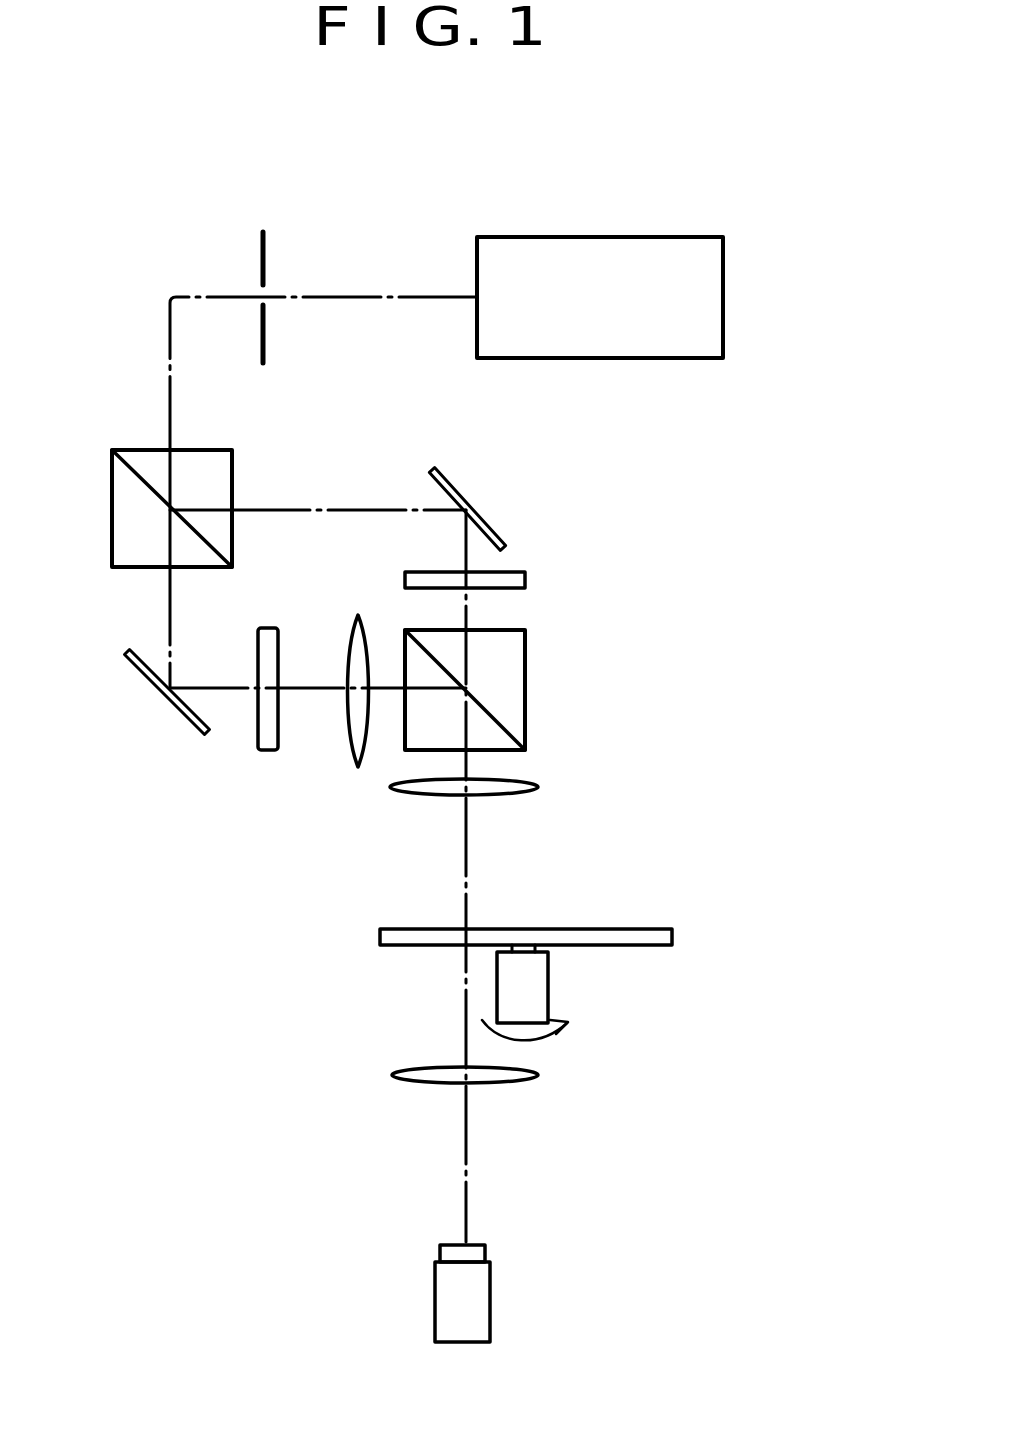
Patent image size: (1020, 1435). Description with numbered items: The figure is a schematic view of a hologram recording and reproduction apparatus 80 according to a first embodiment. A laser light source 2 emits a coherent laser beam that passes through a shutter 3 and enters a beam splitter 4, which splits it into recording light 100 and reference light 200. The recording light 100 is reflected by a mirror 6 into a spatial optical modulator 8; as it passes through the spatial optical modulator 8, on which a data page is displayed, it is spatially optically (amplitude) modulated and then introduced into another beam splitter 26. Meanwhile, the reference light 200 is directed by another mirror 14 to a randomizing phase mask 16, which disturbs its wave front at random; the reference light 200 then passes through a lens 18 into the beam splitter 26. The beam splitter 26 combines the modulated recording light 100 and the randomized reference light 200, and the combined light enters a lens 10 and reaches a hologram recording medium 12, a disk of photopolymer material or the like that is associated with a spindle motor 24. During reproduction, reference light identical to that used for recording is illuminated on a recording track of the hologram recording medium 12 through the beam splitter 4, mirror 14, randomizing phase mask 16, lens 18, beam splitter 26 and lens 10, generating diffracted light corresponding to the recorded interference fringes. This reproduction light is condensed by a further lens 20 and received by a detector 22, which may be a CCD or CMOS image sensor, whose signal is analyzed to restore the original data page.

The laser light source 2 is at (723, 300).
The shutter 3 is at (270, 262).
The beam splitter 4 is at (232, 450).
The mirror 6 is at (487, 513).
The spatial optical modulator 8 is at (525, 570).
The lens 10 is at (390, 787).
The hologram recording medium 12 is at (647, 927).
The mirror 14 is at (157, 687).
The randomizing phase mask 16 is at (268, 628).
The lens 18 is at (353, 740).
The lens 20 is at (392, 1075).
The detector 22 is at (490, 1275).
The spindle motor 24 is at (548, 985).
The beam splitter 26 is at (527, 715).
The hologram recording and reproduction apparatus 80 is at (797, 440).
The recording light 100 is at (265, 510).
The reference light 200 is at (170, 598).